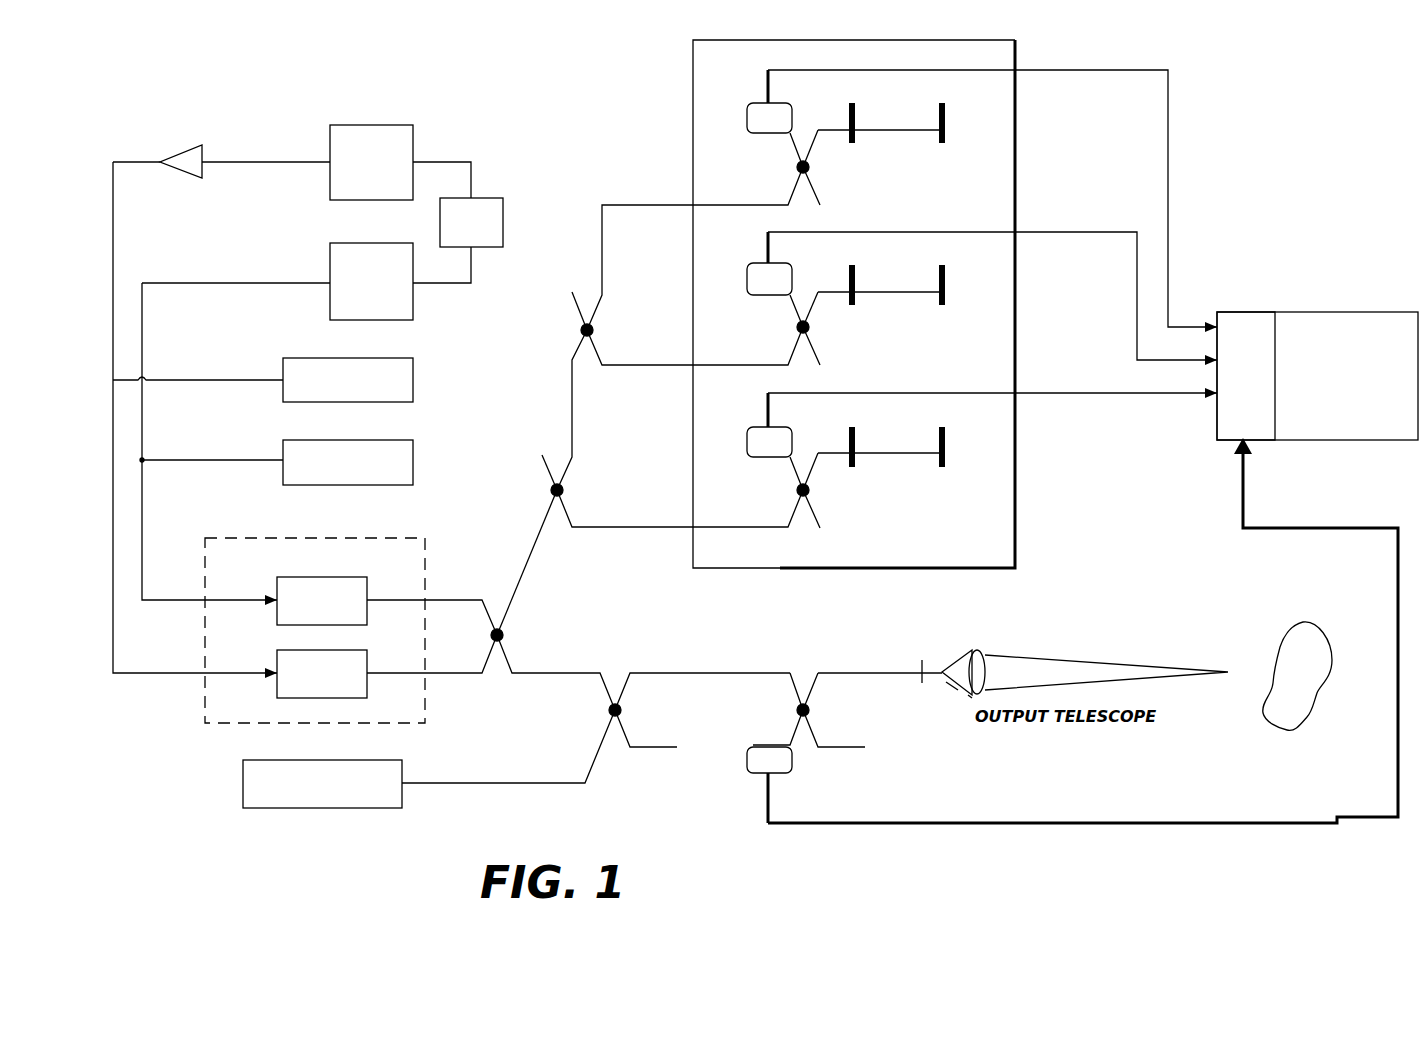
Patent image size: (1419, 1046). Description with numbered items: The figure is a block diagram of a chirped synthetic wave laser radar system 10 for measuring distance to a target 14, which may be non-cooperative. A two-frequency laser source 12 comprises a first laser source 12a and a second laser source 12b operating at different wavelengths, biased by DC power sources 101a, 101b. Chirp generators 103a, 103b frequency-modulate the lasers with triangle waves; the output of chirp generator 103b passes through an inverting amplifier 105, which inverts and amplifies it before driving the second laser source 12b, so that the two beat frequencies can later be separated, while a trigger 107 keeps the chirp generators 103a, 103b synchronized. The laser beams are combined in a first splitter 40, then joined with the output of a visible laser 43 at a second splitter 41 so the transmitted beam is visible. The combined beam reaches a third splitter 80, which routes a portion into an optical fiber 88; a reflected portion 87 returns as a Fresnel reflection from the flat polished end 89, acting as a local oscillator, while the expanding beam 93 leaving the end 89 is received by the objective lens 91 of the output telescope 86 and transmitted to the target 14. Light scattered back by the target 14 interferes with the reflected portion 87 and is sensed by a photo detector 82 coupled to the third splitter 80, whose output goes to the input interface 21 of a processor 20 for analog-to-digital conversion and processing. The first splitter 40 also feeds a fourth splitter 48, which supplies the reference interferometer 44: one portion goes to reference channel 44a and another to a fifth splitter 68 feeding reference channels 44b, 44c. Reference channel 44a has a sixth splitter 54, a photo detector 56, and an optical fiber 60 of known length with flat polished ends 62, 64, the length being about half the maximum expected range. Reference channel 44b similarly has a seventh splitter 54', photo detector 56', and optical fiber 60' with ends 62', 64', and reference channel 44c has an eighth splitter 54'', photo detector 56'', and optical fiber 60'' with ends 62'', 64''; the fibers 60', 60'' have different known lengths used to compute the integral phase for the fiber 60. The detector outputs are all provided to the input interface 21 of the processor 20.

The chirped synthetic wave laser radar system 10 is at (430, 89).
The inverting amplifier 105 is at (184, 154).
The chirp generator 103b is at (330, 150).
The chirp generator 103a is at (330, 268).
The trigger 107 is at (484, 236).
The DC power source 101b is at (283, 372).
The DC power source 101a is at (283, 454).
The two-frequency laser source 12 is at (404, 572).
The first laser source 12a is at (277, 595).
The second laser source 12b is at (277, 670).
The visible laser 43 is at (243, 776).
The first splitter 40 is at (512, 640).
The second splitter 41 is at (600, 710).
The fourth splitter 48 is at (575, 497).
The fifth splitter 68 is at (605, 336).
The reference interferometer 44 is at (661, 113).
The reference channel 44a is at (1035, 464).
The reference channel 44b is at (1035, 302).
The reference channel 44c is at (1038, 140).
The photo detector 56 is at (752, 425).
The photo detector 56' is at (752, 263).
The photo detector 56'' is at (752, 101).
The sixth splitter 54 is at (834, 494).
The seventh splitter 54' is at (837, 333).
The eighth splitter 54'' is at (838, 172).
The flat, polished end 62 is at (879, 441).
The flat, polished end 62' is at (881, 279).
The flat, polished end 62'' is at (883, 117).
The flat, polished end 64 is at (968, 441).
The flat, polished end 64' is at (970, 279).
The flat, polished end 64'' is at (972, 117).
The optical fiber 60 is at (881, 475).
The optical fiber 60' is at (883, 314).
The optical fiber 60'' is at (885, 152).
The processor 20 is at (1402, 347).
The input interface 21 is at (1260, 347).
The third splitter 80 is at (825, 712).
The photo detector 82 is at (751, 772).
The optical fiber 88 is at (850, 672).
The reflected portion 87 is at (920, 660).
The flat polished end 89 is at (944, 659).
The output telescope 86 is at (1018, 662).
The expanding beam 93 is at (946, 690).
The objective lens 91 is at (968, 702).
The target 14 is at (1308, 687).